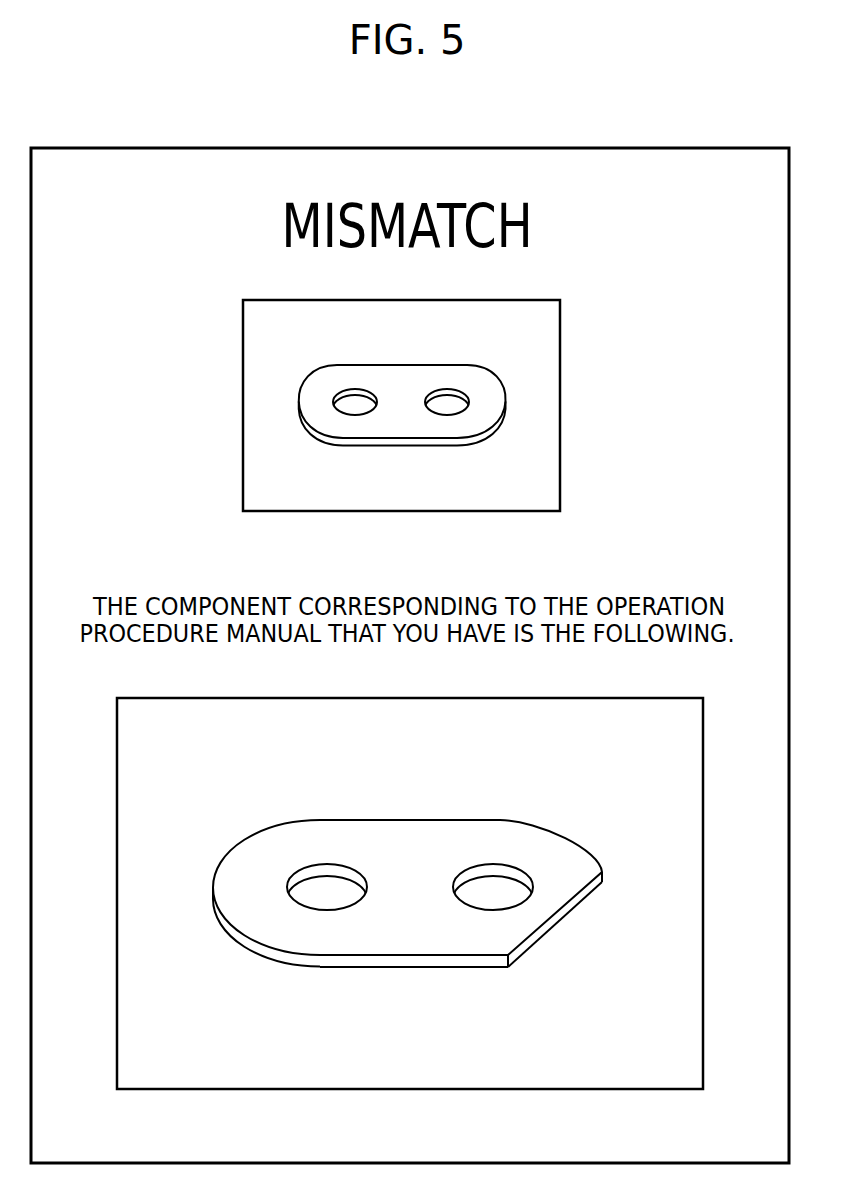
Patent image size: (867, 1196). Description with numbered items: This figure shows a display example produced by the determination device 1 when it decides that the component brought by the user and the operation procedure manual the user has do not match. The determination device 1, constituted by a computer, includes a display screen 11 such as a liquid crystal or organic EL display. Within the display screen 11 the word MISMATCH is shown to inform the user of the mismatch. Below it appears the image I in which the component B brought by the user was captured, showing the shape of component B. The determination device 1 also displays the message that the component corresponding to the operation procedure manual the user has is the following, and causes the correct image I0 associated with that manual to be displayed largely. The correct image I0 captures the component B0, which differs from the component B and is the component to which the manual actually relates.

The determination device 1 is at (101, 138).
The display screen 11 is at (620, 155).
The image I is at (522, 317).
The component B is at (320, 390).
The correct image I0 is at (690, 727).
The component B0 is at (255, 882).